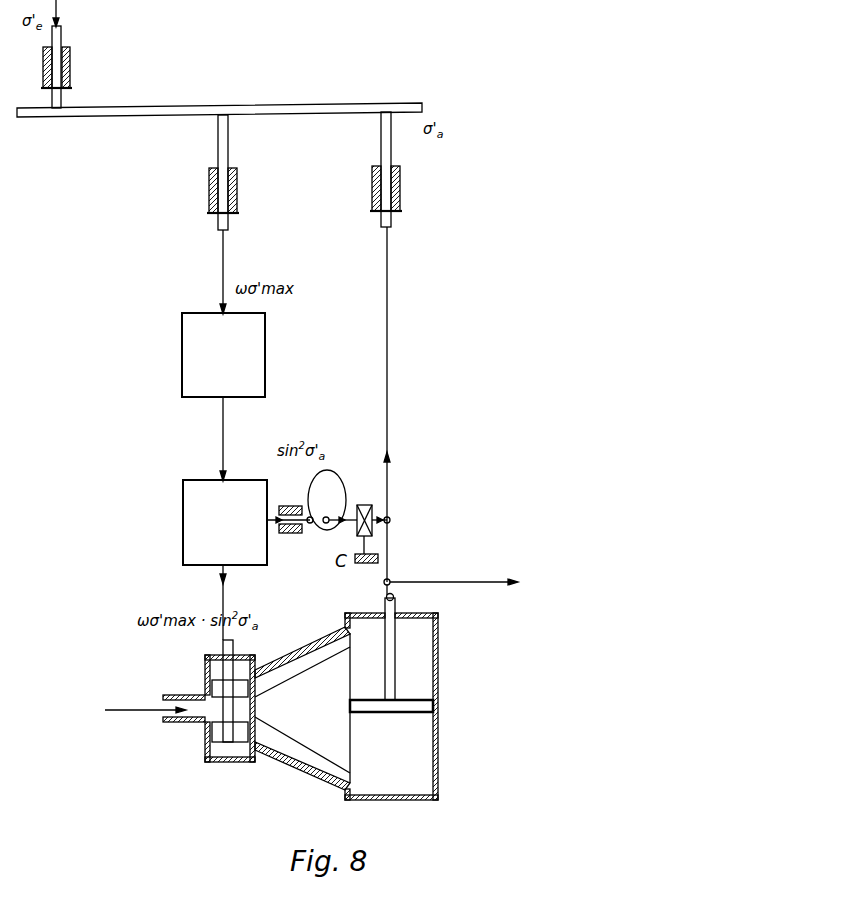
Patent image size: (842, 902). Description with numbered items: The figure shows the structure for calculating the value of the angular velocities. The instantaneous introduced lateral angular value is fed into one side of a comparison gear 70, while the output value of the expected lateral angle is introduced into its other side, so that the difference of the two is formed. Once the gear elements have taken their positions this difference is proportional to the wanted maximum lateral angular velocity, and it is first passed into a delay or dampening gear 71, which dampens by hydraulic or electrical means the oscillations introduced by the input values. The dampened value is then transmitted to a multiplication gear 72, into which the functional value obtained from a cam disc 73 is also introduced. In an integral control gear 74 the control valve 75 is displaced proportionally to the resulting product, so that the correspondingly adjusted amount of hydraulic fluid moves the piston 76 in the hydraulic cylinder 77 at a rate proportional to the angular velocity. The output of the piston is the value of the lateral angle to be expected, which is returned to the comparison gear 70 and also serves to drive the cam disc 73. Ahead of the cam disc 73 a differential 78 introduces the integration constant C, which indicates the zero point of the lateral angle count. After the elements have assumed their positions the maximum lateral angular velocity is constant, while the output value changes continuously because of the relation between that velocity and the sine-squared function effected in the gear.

The comparison gear 70 is at (190, 110).
The delay or dampening gear 71 is at (189, 352).
The multiplication gear 72 is at (192, 520).
The cam disc 73 is at (343, 483).
The integral control gear 74 is at (305, 730).
The control valve 75 is at (228, 668).
The piston 76 is at (422, 683).
The hydraulic cylinder 77 is at (427, 750).
The differential 78 is at (372, 507).